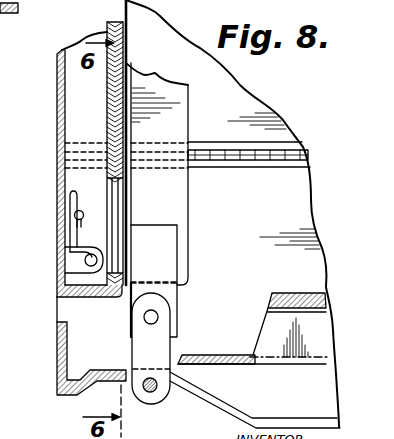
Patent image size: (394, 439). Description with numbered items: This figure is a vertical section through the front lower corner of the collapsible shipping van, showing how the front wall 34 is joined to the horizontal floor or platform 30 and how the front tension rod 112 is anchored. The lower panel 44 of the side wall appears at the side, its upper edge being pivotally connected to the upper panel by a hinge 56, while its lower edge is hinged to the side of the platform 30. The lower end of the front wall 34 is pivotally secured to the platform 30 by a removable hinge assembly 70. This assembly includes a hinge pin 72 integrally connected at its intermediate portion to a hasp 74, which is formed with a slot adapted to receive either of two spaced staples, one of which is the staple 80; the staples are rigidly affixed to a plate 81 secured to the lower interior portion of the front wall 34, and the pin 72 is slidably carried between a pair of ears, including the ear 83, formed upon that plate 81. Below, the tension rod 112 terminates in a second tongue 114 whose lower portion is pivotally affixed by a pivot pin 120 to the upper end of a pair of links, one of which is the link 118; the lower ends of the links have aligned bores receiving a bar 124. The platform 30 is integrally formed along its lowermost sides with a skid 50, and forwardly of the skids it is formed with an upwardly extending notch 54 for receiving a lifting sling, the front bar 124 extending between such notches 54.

The front wall 34 is at (50, 109).
The tension rod 112 is at (150, 76).
The lower panel 44 is at (237, 94).
The hinge 56 is at (284, 155).
The platform 30 is at (300, 290).
The hinge assembly 70 is at (100, 218).
The hasp 74 is at (72, 230).
The staple 80 is at (70, 210).
The plate 81 is at (75, 216).
The hinge pin 72 is at (88, 262).
The ear 83 is at (96, 256).
The second tongue 114 is at (165, 240).
The link 118 is at (154, 319).
The pivot pin 120 is at (158, 314).
The bar 124 is at (158, 384).
The skid 50 is at (233, 416).
The notch 54 is at (104, 374).